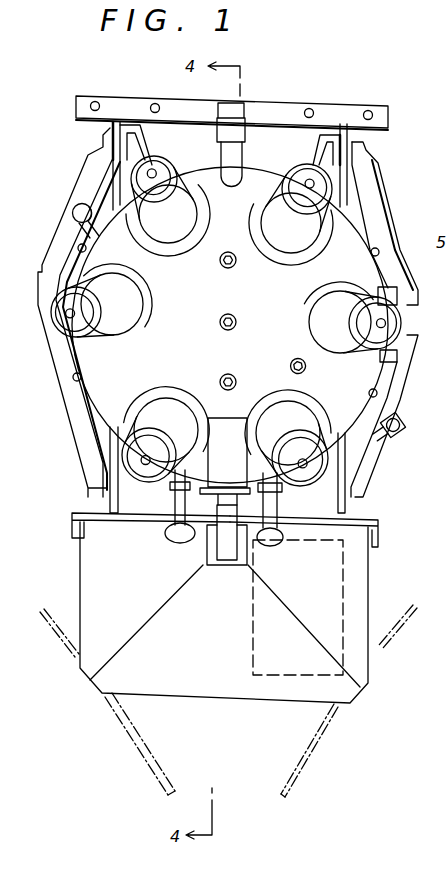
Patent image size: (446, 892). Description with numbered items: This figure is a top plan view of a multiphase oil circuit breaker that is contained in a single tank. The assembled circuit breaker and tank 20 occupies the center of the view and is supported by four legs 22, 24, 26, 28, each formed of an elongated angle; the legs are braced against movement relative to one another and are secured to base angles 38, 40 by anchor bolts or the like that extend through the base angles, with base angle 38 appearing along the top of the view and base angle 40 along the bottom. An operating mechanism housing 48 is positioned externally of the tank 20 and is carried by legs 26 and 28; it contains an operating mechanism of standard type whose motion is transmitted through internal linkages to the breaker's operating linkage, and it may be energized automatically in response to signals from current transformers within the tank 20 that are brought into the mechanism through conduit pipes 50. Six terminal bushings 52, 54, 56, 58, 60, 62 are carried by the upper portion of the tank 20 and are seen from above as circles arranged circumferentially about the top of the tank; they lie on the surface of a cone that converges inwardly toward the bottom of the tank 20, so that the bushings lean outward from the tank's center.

The circuit breaker and tank 20 is at (334, 260).
The leg 22 is at (108, 125).
The leg 24 is at (358, 133).
The leg 26 is at (345, 516).
The leg 28 is at (105, 506).
The base angle 38 is at (283, 107).
The base angle 40 is at (379, 537).
The operating mechanism housing 48 is at (230, 653).
The conduit pipes 50 is at (226, 552).
The terminal bushing 52 is at (108, 296).
The terminal bushing 54 is at (172, 235).
The terminal bushing 56 is at (291, 236).
The terminal bushing 58 is at (335, 324).
The terminal bushing 60 is at (293, 417).
The terminal bushing 62 is at (160, 410).